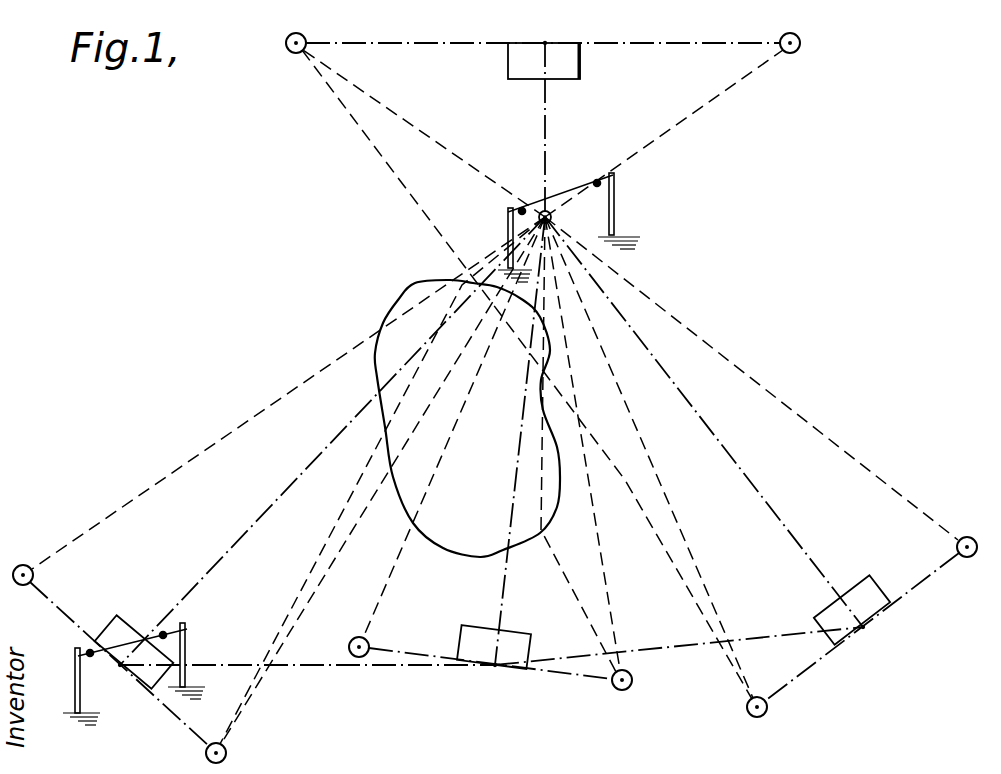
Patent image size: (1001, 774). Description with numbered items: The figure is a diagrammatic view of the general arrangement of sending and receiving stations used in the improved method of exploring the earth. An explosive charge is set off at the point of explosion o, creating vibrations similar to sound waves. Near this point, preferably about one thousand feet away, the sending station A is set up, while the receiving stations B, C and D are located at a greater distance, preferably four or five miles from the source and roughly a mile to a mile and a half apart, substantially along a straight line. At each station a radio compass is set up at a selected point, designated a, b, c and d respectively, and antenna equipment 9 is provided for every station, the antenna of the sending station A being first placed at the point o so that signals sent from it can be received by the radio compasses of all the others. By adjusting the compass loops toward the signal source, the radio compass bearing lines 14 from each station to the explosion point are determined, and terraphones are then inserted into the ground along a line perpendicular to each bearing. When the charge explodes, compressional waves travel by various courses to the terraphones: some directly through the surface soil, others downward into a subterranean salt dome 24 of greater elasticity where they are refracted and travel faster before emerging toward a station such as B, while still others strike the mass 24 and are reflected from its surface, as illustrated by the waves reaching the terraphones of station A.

The radio compass point a is at (545, 44).
The sending station A is at (544, 79).
The antenna equipment 9 is at (571, 190).
The point of explosion o is at (552, 216).
The radio compass bearing line 14 is at (230, 556).
The salt dome 24 is at (472, 545).
The radio compass point b is at (118, 666).
The receiving station B is at (134, 673).
The radio compass point c is at (495, 666).
The receiving station C is at (484, 665).
The radio compass point d is at (864, 628).
The receiving station D is at (852, 631).